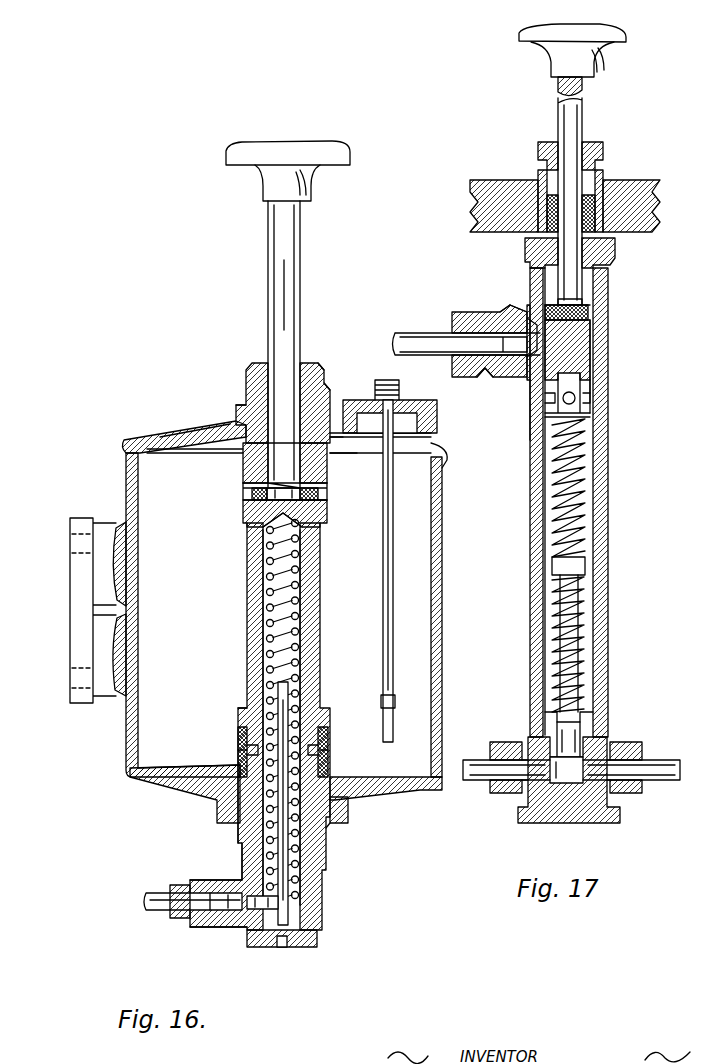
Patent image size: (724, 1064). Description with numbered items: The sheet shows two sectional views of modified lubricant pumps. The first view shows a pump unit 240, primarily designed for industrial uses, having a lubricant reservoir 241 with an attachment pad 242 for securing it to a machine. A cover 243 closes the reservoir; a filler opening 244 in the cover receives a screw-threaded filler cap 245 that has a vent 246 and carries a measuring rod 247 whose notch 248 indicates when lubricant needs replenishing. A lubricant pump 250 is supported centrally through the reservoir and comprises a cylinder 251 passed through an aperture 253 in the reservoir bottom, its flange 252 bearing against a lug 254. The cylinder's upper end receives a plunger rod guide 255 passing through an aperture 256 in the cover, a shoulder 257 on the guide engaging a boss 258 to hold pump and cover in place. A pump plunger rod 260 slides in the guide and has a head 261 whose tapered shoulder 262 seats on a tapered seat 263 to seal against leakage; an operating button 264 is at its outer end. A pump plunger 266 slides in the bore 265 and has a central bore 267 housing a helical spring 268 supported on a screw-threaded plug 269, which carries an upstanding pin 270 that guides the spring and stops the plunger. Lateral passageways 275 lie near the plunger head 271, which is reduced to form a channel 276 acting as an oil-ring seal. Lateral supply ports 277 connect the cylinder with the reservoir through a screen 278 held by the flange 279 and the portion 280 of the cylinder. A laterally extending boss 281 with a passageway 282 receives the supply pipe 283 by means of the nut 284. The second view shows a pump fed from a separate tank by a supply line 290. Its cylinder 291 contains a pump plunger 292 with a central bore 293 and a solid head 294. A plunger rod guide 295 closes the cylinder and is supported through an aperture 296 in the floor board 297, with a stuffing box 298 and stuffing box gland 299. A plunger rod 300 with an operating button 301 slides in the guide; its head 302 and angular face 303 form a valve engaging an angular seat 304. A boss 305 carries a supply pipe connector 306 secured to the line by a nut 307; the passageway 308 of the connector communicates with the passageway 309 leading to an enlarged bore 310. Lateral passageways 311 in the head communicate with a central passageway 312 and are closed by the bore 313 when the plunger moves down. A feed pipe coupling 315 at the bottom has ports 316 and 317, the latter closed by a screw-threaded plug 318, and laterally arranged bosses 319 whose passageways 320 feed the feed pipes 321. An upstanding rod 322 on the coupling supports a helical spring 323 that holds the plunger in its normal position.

In FIG. 16, the pump unit 240 is at (170, 418).
In FIG. 16, the lubricant reservoir 241 is at (125, 484).
In FIG. 16, the attachment pad 242 is at (78, 594).
In FIG. 16, the cover 243 is at (158, 440).
In FIG. 16, the filler opening 244 is at (419, 424).
In FIG. 16, the filler cap 245 is at (408, 404).
In FIG. 16, the vent 246 is at (378, 395).
In FIG. 16, the measuring rod 247 is at (394, 594).
In FIG. 16, the notch 248 is at (394, 700).
In FIG. 16, the lubricant pump 250 is at (236, 620).
In FIG. 16, the cylinder 251 is at (250, 566).
In FIG. 16, the flange 252 is at (331, 824).
In FIG. 16, the aperture 253 is at (218, 806).
In FIG. 16, the lug 254 is at (348, 805).
In FIG. 16, the plunger rod guide 255 is at (322, 365).
In FIG. 16, the aperture 256 is at (252, 380).
In FIG. 16, the shoulder 257 is at (329, 388).
In FIG. 16, the boss 258 is at (236, 412).
In FIG. 16, the pump plunger rod 260 is at (296, 251).
In FIG. 16, the head 261 is at (310, 494).
In FIG. 16, the tapered shoulder 262 is at (320, 478).
In FIG. 16, the tapered seat 263 is at (258, 476).
In FIG. 16, the operating button 264 is at (330, 152).
In FIG. 16, the bore 265 is at (330, 758).
In FIG. 16, the pump plunger 266 is at (300, 578).
In FIG. 16, the central bore 267 is at (300, 550).
In FIG. 16, the helical spring 268 is at (280, 596).
In FIG. 16, the screw-threaded plug 269 is at (320, 922).
In FIG. 16, the upstanding pin 270 is at (286, 856).
In FIG. 16, the plunger head 271 is at (262, 512).
In FIG. 16, the lateral passageways 275 is at (252, 494).
In FIG. 16, the channel 276 is at (266, 526).
In FIG. 16, the lateral supply ports 277 is at (238, 756).
In FIG. 16, the screen 278 is at (238, 733).
In FIG. 16, the flange 279 is at (240, 705).
In FIG. 16, the portion 280 is at (336, 782).
In FIG. 16, the laterally extending boss 281 is at (208, 880).
In FIG. 16, the passageway 282 is at (252, 910).
In FIG. 16, the supply pipe 283 is at (150, 896).
In FIG. 16, the nut 284 is at (178, 918).
In FIG. 17, the supply line 290 is at (420, 333).
In FIG. 17, the cylinder 291 is at (596, 432).
In FIG. 17, the pump plunger 292 is at (596, 500).
In FIG. 17, the central bore 293 is at (582, 470).
In FIG. 17, the solid head 294 is at (596, 343).
In FIG. 17, the plunger rod guide 295 is at (612, 253).
In FIG. 17, the aperture 296 is at (600, 190).
In FIG. 17, the floor board 297 is at (640, 185).
In FIG. 17, the stuffing box 298 is at (550, 230).
In FIG. 17, the stuffing box gland 299 is at (603, 150).
In FIG. 17, the plunger rod 300 is at (584, 118).
In FIG. 17, the operating button 301 is at (548, 62).
In FIG. 17, the head 302 is at (592, 312).
In FIG. 17, the angular face 303 is at (600, 296).
In FIG. 17, the angular seat 304 is at (560, 299).
In FIG. 17, the boss 305 is at (526, 301).
In FIG. 17, the supply pipe connector 306 is at (500, 312).
In FIG. 17, the nut 307 is at (466, 314).
In FIG. 17, the passageway 308 is at (500, 372).
In FIG. 17, the passageway 309 is at (528, 380).
In FIG. 17, the enlarged bore 310 is at (598, 367).
In FIG. 17, the lateral passageways 311 is at (592, 395).
In FIG. 17, the central passageway 312 is at (531, 420).
In FIG. 17, the bore 313 is at (585, 605).
In FIG. 17, the feed pipe coupling 315 is at (584, 736).
In FIG. 17, the port 316 is at (572, 727).
In FIG. 17, the port 317 is at (560, 778).
In FIG. 17, the screw-threaded plug 318 is at (588, 824).
In FIG. 17, the laterally arranged bosses 319 is at (528, 745).
In FIG. 17, the passageway 320 is at (510, 782).
In FIG. 17, the feed pipes 321 is at (484, 762).
In FIG. 17, the upstanding rod 322 is at (585, 645).
In FIG. 17, the helical spring 323 is at (560, 540).